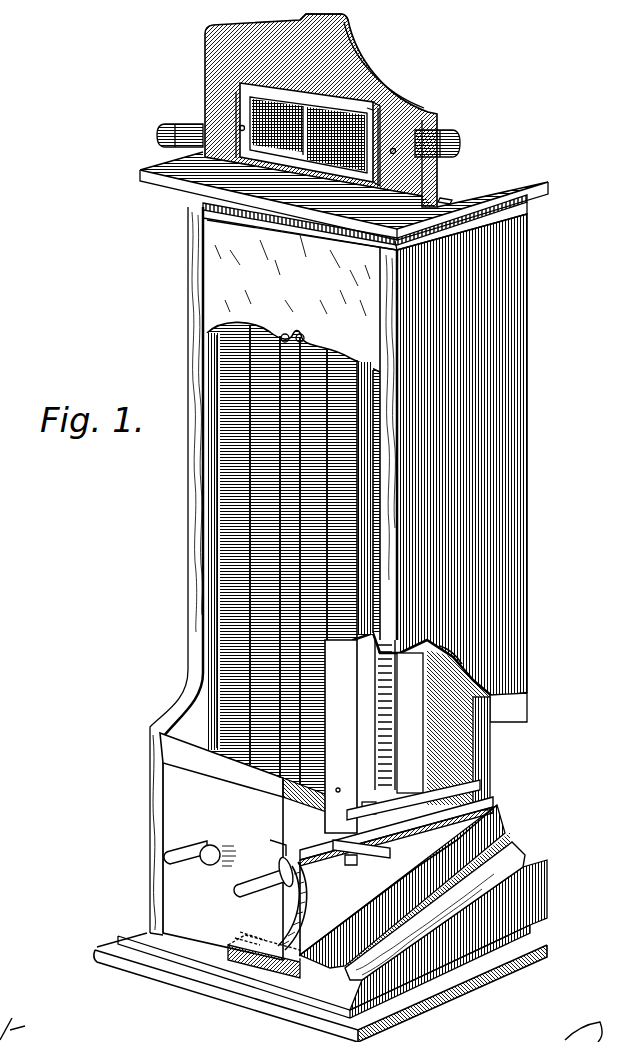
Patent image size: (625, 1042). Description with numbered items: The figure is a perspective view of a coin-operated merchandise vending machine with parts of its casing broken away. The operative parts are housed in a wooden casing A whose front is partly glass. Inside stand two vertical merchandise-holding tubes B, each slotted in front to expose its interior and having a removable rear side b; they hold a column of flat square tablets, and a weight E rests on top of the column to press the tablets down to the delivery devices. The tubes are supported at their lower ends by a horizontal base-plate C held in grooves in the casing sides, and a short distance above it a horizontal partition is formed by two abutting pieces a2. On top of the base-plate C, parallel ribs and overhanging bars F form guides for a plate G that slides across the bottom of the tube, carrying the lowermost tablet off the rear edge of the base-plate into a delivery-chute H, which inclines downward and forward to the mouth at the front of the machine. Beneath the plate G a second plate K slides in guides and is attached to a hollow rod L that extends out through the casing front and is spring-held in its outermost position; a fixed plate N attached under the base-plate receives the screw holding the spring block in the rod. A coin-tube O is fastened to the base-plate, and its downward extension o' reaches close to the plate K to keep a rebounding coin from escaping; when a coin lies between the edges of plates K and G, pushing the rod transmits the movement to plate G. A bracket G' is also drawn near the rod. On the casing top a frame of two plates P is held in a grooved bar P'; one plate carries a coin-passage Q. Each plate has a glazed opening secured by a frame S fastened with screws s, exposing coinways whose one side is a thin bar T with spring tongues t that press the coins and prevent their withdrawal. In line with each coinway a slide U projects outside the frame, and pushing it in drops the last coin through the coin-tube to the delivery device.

The casing A is at (517, 257).
The frame-plate P is at (306, 110).
The bar P' is at (341, 197).
The coin-passage Q is at (338, 17).
The thin bar T is at (353, 110).
The spring tongue t is at (360, 96).
The frame S is at (313, 139).
The screw s is at (311, 148).
The slide U is at (177, 124).
The merchandise-holding tube B is at (297, 650).
The rear side of tube b is at (455, 657).
The partition piece a2 is at (207, 697).
The weight E is at (303, 617).
The weight W is at (336, 559).
The coin-tube O is at (341, 736).
The downward extension o' is at (342, 790).
The overhanging bar F is at (377, 815).
The base-plate C is at (483, 803).
The second plate K is at (323, 861).
The fixed plate N is at (350, 864).
The bracket G' is at (262, 854).
The rod L is at (180, 858).
The delivery-chute H is at (423, 907).
The plate G is at (454, 911).